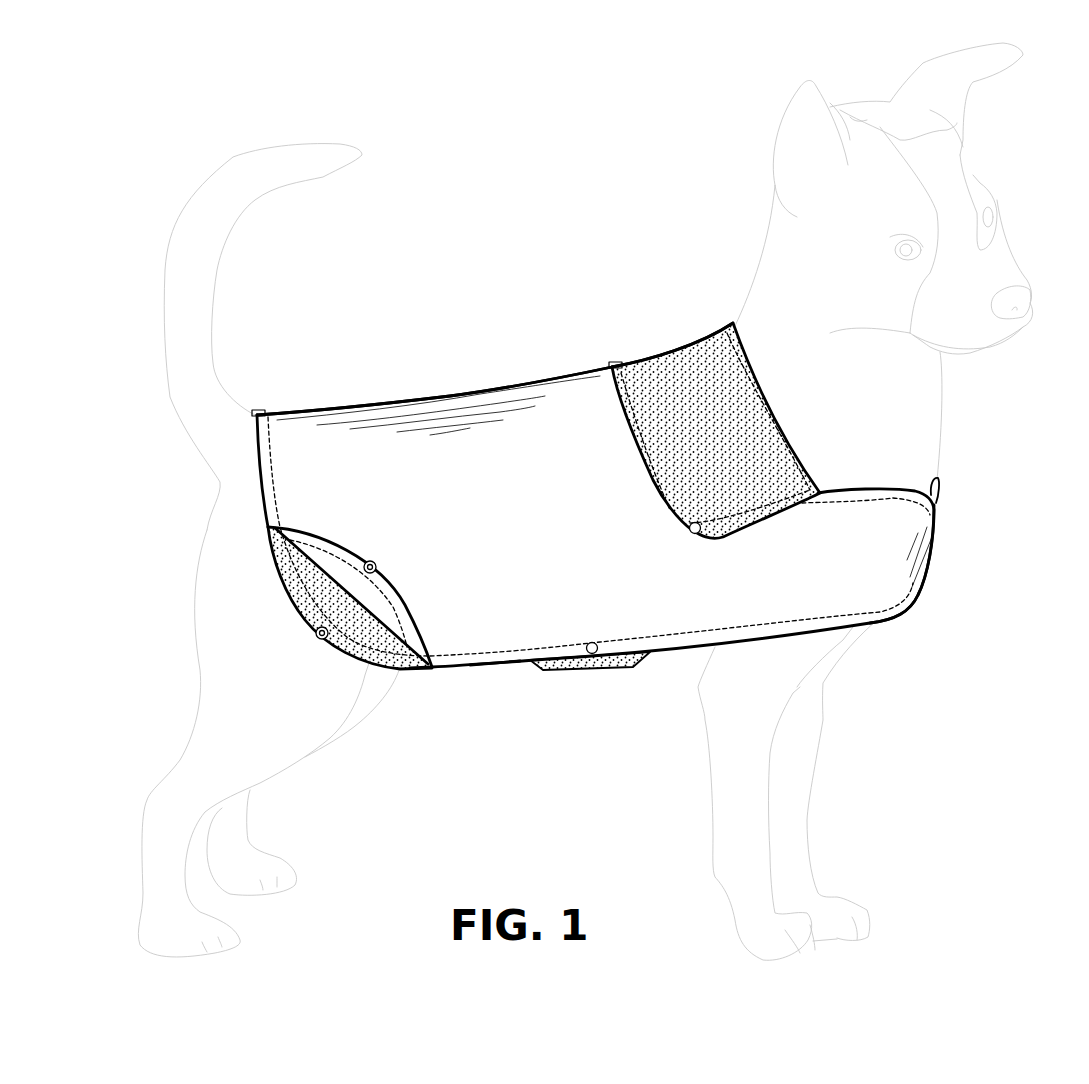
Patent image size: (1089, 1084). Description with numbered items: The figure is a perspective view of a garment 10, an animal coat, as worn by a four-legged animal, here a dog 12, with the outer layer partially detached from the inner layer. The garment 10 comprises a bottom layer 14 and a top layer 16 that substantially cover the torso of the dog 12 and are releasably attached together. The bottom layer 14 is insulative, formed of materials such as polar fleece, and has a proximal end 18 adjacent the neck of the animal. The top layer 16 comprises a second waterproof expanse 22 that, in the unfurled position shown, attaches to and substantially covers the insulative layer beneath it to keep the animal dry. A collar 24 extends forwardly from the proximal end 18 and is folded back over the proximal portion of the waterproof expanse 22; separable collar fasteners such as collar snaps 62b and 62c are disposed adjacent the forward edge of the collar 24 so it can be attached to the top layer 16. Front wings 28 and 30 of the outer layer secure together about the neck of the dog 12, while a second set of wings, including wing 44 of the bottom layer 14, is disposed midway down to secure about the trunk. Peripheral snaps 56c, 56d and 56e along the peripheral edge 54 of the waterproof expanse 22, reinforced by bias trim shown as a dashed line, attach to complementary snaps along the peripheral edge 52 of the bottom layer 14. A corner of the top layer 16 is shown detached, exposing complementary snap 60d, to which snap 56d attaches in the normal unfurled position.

The garment 10 is at (620, 496).
The dog 12 is at (1018, 163).
The bottom layer 14 is at (340, 668).
The top layer 16 is at (440, 392).
The proximal end 18 is at (775, 400).
The second waterproof expanse 22 is at (535, 519).
The collar 24 is at (676, 348).
The front wing 28 is at (930, 552).
The front wing 30 is at (940, 490).
The wing of second set 44 is at (591, 672).
The peripheral edge 52 is at (415, 674).
The peripheral edge 54 is at (493, 670).
The peripheral snap 56c is at (258, 408).
The peripheral snap 56d is at (372, 560).
The peripheral snap 56e is at (591, 642).
The complementary snap 60d is at (315, 634).
The collar snap 62b is at (613, 360).
The collar snap 62c is at (696, 534).